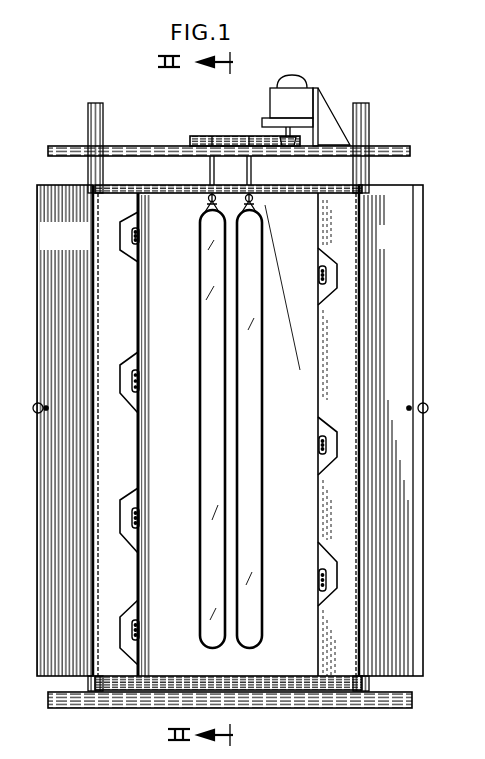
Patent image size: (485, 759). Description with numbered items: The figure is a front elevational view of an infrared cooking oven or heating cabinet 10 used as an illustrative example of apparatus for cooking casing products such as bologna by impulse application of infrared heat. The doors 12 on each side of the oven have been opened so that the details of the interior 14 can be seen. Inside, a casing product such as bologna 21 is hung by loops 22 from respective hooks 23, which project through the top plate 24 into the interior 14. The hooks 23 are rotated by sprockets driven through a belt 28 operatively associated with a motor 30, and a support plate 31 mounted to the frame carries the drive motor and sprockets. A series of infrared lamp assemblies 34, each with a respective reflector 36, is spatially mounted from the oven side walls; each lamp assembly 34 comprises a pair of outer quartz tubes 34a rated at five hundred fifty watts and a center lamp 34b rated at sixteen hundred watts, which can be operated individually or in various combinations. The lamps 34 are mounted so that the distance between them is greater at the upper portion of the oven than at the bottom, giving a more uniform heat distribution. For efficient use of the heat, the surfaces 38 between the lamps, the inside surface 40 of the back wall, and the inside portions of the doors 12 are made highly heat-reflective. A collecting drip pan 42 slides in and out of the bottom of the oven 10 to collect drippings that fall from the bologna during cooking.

The infrared cooking oven 10 is at (410, 102).
The doors 12 is at (73, 246).
The interior 14 is at (177, 495).
The bologna 21 is at (210, 318).
The loops 22 is at (258, 206).
The hooks 23 is at (253, 172).
The top plate 24 is at (172, 188).
The belt 28 is at (228, 138).
The motor 30 is at (298, 103).
The support plate 31 is at (142, 144).
The infrared lamp assemblies 34 is at (142, 240).
The outer quartz tubes 34a is at (140, 366).
The center lamp 34b is at (140, 380).
The reflectors 36 is at (121, 256).
The surfaces between the lamps 38 is at (140, 456).
The inside surface of the back wall 40 is at (322, 378).
The collecting drip pan 42 is at (342, 685).